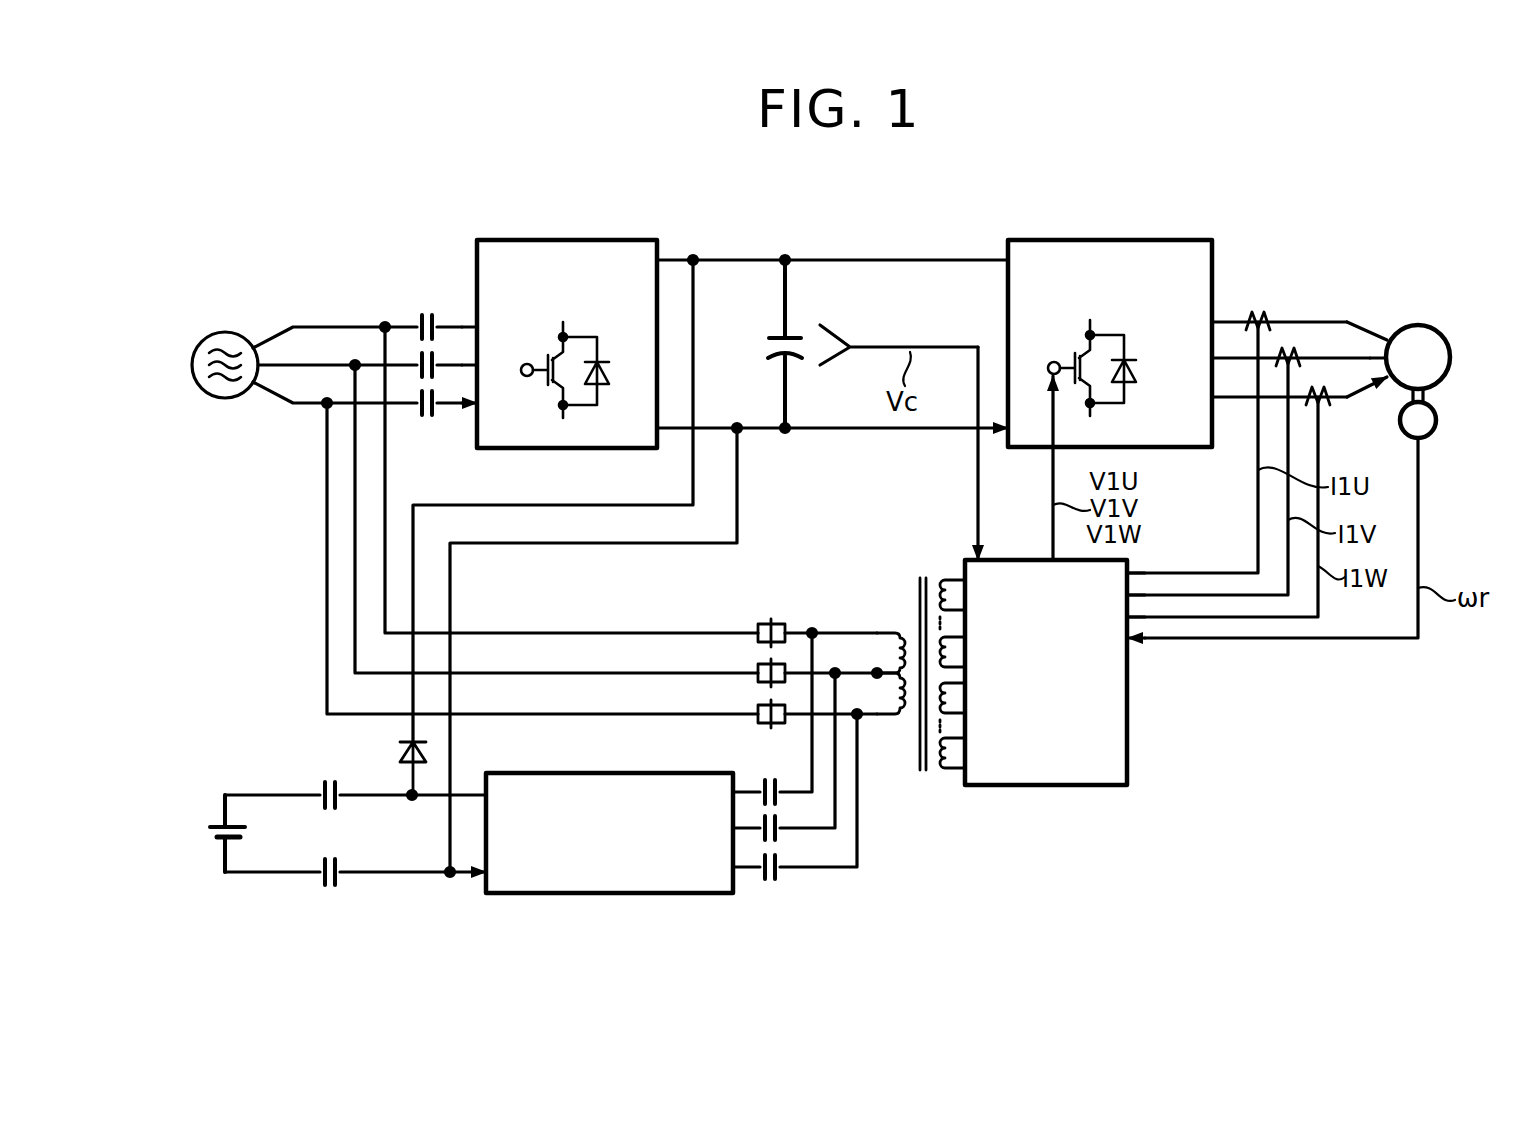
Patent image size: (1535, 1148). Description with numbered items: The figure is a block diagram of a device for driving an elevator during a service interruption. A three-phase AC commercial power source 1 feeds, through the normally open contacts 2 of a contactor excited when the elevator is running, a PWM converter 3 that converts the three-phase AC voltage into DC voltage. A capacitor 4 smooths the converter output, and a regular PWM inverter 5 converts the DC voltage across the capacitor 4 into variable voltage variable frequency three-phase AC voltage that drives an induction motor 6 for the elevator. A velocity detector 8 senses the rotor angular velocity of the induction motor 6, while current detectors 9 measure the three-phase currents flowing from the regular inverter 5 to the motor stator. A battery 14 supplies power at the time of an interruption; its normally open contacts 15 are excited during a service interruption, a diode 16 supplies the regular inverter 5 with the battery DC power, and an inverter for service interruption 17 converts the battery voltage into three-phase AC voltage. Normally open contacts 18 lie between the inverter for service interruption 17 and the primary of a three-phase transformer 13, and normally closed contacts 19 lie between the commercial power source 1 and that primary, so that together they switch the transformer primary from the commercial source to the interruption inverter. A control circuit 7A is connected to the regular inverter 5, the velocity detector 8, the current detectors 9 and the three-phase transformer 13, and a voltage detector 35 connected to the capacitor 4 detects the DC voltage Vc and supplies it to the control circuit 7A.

The three-phase AC commercial power source 1 is at (225, 332).
The normally open contacts 2 is at (427, 313).
The PWM converter 3 is at (567, 240).
The capacitor 4 is at (770, 345).
The regular PWM inverter 5 is at (1103, 240).
The induction motor 6 is at (1418, 325).
The velocity detector 8 is at (1437, 421).
The current detectors 9 is at (1256, 318).
The three-phase transformer 13 is at (920, 575).
The battery 14 is at (211, 826).
The normally open contacts 15 is at (338, 855).
The diode 16 is at (399, 752).
The inverter for service interruption 17 is at (633, 773).
The normally open contacts 18 is at (775, 882).
The normally closed contacts 19 is at (786, 623).
The voltage detector 35 is at (845, 336).
The control circuit 7A is at (1127, 705).